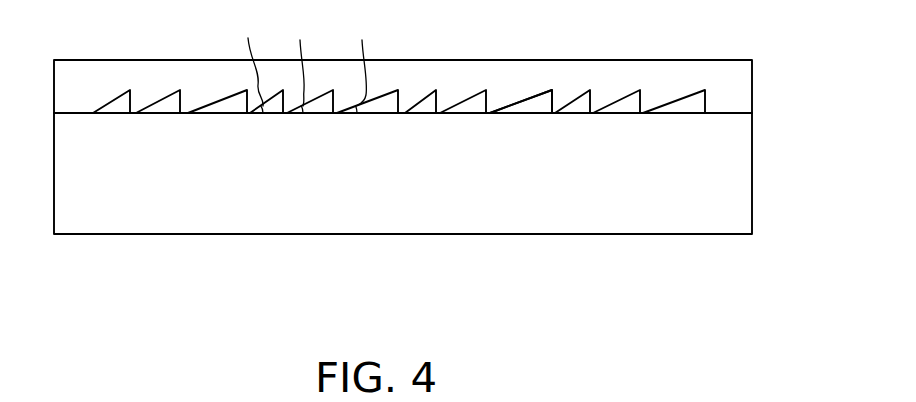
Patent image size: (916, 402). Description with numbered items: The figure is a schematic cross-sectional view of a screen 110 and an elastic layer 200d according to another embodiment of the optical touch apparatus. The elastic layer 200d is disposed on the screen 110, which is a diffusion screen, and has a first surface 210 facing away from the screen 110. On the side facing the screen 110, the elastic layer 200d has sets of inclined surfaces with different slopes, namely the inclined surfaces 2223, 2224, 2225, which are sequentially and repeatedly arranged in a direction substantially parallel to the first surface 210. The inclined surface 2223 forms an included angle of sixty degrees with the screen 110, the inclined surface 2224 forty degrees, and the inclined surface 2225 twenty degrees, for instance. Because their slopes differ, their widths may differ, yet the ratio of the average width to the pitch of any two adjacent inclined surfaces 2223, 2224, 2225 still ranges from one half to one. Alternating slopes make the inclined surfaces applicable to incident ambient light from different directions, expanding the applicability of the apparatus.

The screen 110 is at (728, 190).
The first surface 210 is at (705, 60).
The elastic layer 200d is at (742, 80).
The inclined surface 2223 is at (413, 104).
The inclined surface 2224 is at (463, 102).
The inclined surface 2225 is at (522, 100).